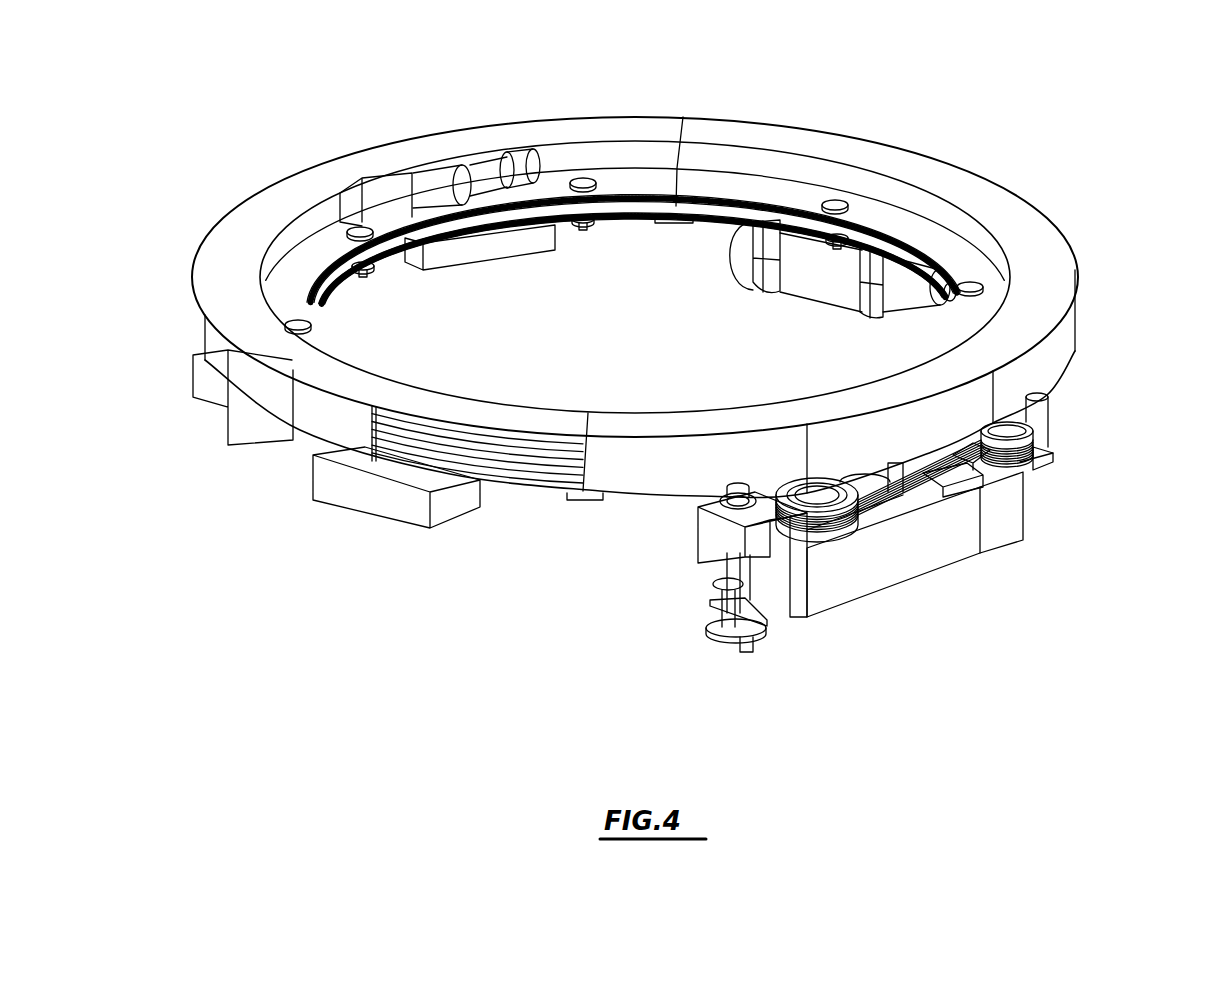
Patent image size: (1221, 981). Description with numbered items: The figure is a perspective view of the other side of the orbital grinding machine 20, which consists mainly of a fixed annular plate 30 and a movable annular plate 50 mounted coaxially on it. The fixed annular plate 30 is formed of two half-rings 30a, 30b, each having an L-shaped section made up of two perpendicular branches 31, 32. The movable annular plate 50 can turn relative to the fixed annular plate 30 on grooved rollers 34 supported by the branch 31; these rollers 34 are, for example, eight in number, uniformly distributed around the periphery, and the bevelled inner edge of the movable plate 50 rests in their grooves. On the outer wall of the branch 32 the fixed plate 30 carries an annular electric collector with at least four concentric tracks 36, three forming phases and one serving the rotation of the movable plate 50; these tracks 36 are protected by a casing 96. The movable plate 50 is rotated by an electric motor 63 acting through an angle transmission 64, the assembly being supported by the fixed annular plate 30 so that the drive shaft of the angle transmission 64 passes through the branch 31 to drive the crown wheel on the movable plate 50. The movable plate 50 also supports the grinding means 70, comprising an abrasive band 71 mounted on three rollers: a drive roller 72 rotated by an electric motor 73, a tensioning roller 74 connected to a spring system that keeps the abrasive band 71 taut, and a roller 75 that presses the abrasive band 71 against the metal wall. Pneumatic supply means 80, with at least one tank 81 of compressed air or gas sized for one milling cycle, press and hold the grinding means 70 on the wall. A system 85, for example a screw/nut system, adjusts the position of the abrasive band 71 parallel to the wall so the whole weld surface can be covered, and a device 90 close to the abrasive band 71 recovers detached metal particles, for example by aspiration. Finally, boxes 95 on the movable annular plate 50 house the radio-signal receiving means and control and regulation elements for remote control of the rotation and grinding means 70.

The grinding machine 20 is at (845, 88).
The fixed annular plate 30 is at (681, 308).
The half-ring 30a is at (232, 200).
The half-ring 30b is at (1062, 321).
The branch 31 is at (333, 288).
The branch 32 is at (205, 340).
The grooved rollers 34 is at (368, 270).
The concentric tracks 36 is at (529, 442).
The movable annular plate 50 is at (700, 230).
The electric motor 63 is at (433, 175).
The angle transmission 64 is at (377, 180).
The grinding means 70 is at (947, 583).
The abrasive band 71 is at (923, 492).
The drive roller 72 is at (833, 533).
The electric motor 73 is at (972, 522).
The tensioning roller 74 is at (1047, 428).
The pressing roller 75 is at (877, 498).
The pneumatic supply means 80 is at (795, 297).
The tank 81 is at (826, 284).
The adjusting system 85 is at (705, 591).
The recovery device 90 is at (1060, 407).
The boxes 95 is at (482, 256).
The casing 96 is at (1073, 343).